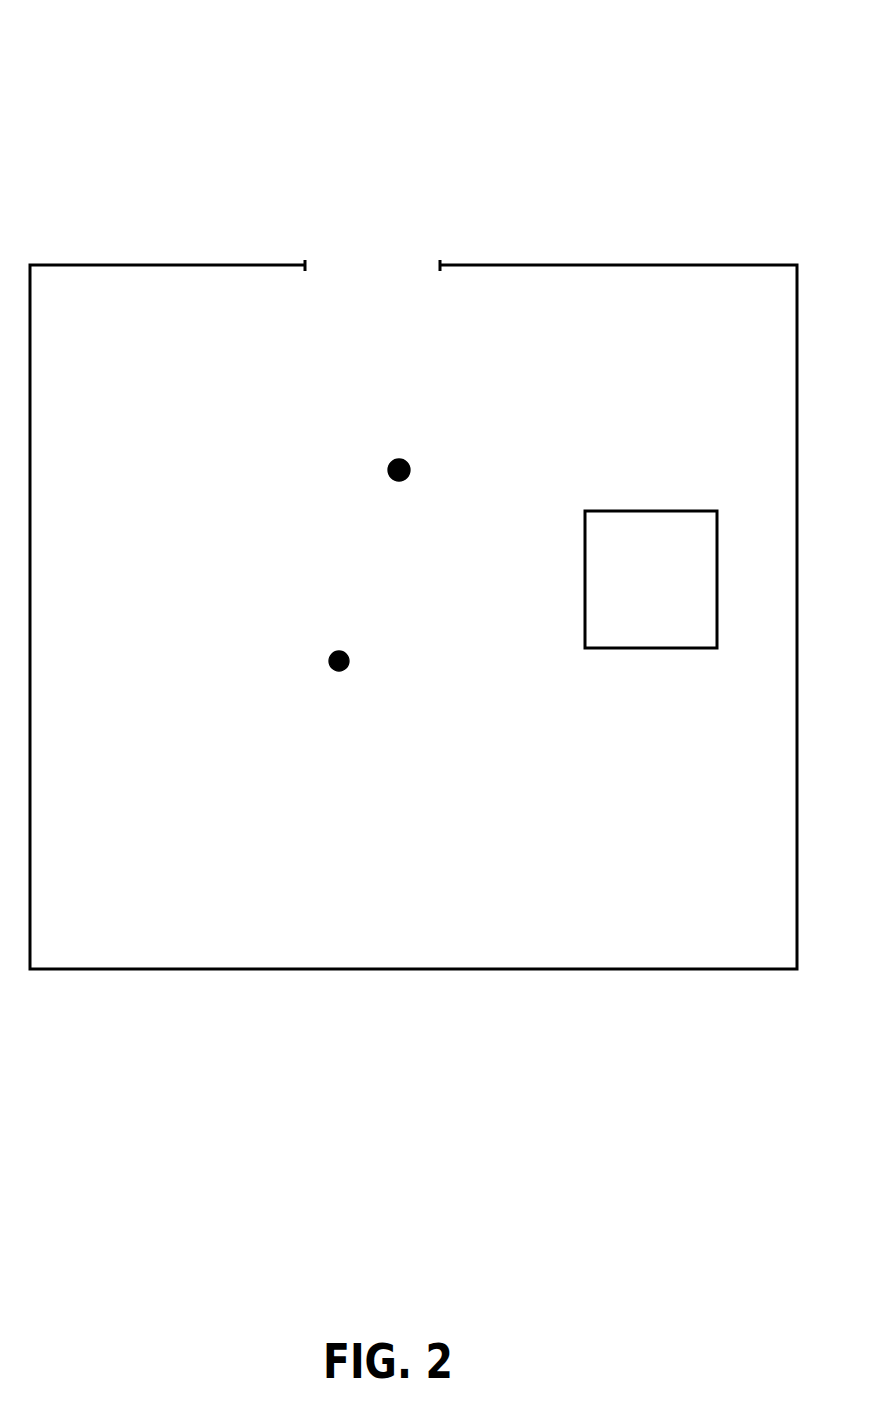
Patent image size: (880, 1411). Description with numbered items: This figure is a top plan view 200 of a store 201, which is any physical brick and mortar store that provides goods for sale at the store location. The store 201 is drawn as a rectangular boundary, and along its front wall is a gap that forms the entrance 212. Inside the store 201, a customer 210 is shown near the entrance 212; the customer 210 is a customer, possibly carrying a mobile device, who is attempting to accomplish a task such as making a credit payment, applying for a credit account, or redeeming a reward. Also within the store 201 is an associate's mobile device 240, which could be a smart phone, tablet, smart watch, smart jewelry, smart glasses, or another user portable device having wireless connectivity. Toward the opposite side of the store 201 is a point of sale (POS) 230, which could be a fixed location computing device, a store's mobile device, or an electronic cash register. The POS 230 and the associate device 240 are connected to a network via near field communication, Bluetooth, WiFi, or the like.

The top plan view 200 is at (131, 19).
The store 201 is at (597, 262).
The entrance 212 is at (357, 262).
The customer 210 is at (394, 463).
The associate's mobile device 240 is at (334, 656).
The point of sale (POS) 230 is at (651, 579).